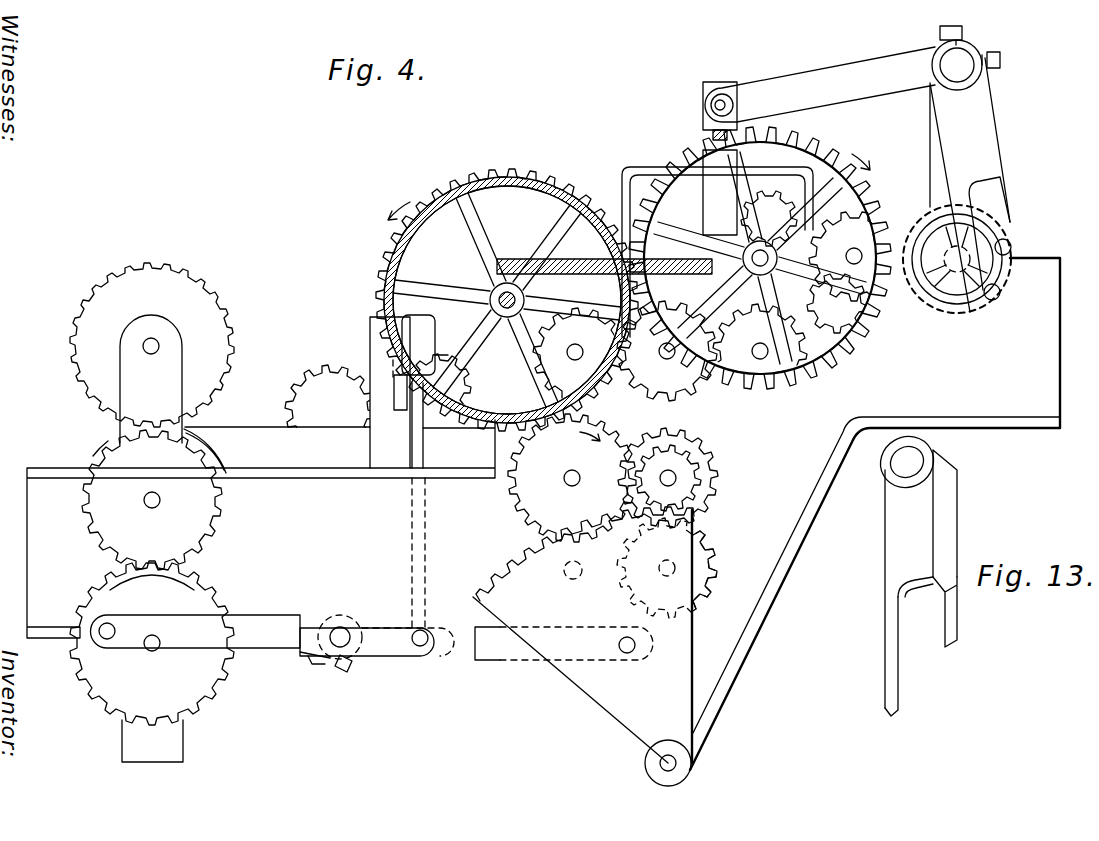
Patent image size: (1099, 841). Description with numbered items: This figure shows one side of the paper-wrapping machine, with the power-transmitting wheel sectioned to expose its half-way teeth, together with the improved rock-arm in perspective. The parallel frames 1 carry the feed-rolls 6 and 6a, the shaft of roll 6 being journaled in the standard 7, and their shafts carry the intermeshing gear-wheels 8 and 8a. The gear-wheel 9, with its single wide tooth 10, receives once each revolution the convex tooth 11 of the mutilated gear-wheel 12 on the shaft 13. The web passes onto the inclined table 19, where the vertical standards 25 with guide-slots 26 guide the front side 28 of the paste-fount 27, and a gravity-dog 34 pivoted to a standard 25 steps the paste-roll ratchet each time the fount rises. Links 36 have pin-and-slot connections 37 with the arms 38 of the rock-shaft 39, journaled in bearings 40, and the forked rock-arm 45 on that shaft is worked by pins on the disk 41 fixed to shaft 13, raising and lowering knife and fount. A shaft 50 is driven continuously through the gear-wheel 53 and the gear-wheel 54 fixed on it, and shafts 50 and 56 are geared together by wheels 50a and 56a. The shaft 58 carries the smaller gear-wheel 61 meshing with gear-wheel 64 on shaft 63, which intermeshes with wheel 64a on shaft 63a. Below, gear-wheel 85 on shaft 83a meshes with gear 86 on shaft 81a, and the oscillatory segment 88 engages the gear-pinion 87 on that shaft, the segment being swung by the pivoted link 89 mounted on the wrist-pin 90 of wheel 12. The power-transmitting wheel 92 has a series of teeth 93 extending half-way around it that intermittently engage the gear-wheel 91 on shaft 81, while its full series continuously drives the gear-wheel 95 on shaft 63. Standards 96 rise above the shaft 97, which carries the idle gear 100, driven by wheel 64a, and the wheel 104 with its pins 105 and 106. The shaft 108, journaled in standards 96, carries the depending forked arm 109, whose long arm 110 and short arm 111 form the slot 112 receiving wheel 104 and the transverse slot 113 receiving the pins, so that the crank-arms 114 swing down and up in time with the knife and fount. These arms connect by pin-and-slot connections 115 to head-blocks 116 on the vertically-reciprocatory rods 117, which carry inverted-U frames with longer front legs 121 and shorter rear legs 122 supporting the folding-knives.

In FIG. 4, the parallel frames 1 is at (838, 515).
In FIG. 4, the feed-roll 6 is at (152, 345).
In FIG. 4, the feed-roll 6a is at (90, 455).
In FIG. 4, the standard 7 is at (151, 379).
In FIG. 4, the gear-wheel 8 is at (230, 348).
In FIG. 4, the gear-wheel 8a is at (226, 462).
In FIG. 4, the gear-wheel 9 is at (152, 500).
In FIG. 4, the tooth 10 is at (154, 536).
In FIG. 4, the convex tooth 11 is at (155, 545).
In FIG. 4, the mutilated gear-wheel 12 is at (152, 661).
In FIG. 4, the shaft 13 is at (160, 650).
In FIG. 4, the inclined plane or table 19 is at (261, 529).
In FIG. 4, the vertical standards 25 is at (370, 325).
In FIG. 4, the vertical guide-slots 26 is at (405, 330).
In FIG. 4, the paste-fount 27 is at (444, 352).
In FIG. 4, the front side of paste-fount 28 is at (394, 400).
In FIG. 4, the gravity-dog 34 is at (440, 325).
In FIG. 4, the links 36 is at (411, 445).
In FIG. 4, the pin-and-slot connection 37 is at (422, 648).
In FIG. 4, the arms 38 is at (383, 656).
In FIG. 4, the rock-shaft 39 is at (340, 627).
In FIG. 4, the bearings 40 is at (332, 671).
In FIG. 4, the disk 41 is at (218, 698).
In FIG. 4, the forked rock-arm 45 is at (300, 658).
In FIG. 4, the shaft 50 is at (572, 360).
In FIG. 4, the gear-wheel 50a is at (580, 355).
In FIG. 4, the gear-wheel 53 is at (336, 400).
In FIG. 4, the gear-wheel 54 is at (480, 360).
In FIG. 4, the shaft 56 is at (657, 353).
In FIG. 4, the gear-wheel 56a is at (667, 351).
In FIG. 4, the shaft 58 is at (760, 351).
In FIG. 4, the gear-wheel 61 is at (762, 336).
In FIG. 4, the shaft 63 is at (745, 265).
In FIG. 4, the shaft 63a is at (850, 266).
In FIG. 4, the gear-wheel 64 is at (770, 210).
In FIG. 4, the gear-wheel 64a is at (854, 256).
In FIG. 4, the shaft 81 is at (563, 478).
In FIG. 4, the shaft 81a is at (672, 465).
In FIG. 4, the shaft 83a is at (672, 552).
In FIG. 4, the gear-wheel 85 is at (712, 562).
In FIG. 4, the gear 86 is at (710, 462).
In FIG. 4, the gear-pinion 87 is at (690, 480).
In FIG. 4, the oscillatory segment 88 is at (583, 646).
In FIG. 4, the pivoted link 89 is at (372, 637).
In FIG. 4, the wrist-pin 90 is at (115, 629).
In FIG. 4, the gear-wheel 91 is at (601, 478).
In FIG. 4, the power-transmitting wheel 92 is at (442, 282).
In FIG. 4, the series of teeth 93 is at (438, 188).
In FIG. 4, the gear-wheel 95 is at (697, 152).
In FIG. 4, the standards 96 is at (929, 145).
In FIG. 4, the shaft 97 is at (950, 257).
In FIG. 4, the idle gear-wheel 100 is at (935, 310).
In FIG. 4, the wheel 104 is at (1008, 222).
In FIG. 4, the pin 105 is at (1000, 295).
In FIG. 4, the pin 106 is at (1012, 247).
In FIG. 4, the shaft 108 is at (966, 58).
In FIG. 4, the forked arm 109 is at (970, 185).
In FIG. 13, the forked arm 109 is at (914, 567).
In FIG. 4, the long arm 110 is at (968, 300).
In FIG. 13, the long arm 110 is at (898, 692).
In FIG. 4, the short arm 111 is at (1003, 205).
In FIG. 13, the short arm 111 is at (948, 628).
In FIG. 13, the slot 112 is at (924, 644).
In FIG. 4, the transverse slot 113 is at (1000, 186).
In FIG. 13, the transverse slot 113 is at (919, 599).
In FIG. 4, the crank-arms 114 is at (820, 84).
In FIG. 4, the pin-and-slot connection 115 is at (711, 105).
In FIG. 4, the head-blocks 116 is at (725, 80).
In FIG. 4, the vertically-reciprocatory rods 117 is at (703, 206).
In FIG. 4, the front legs 121 is at (626, 176).
In FIG. 4, the rear legs 122 is at (818, 225).